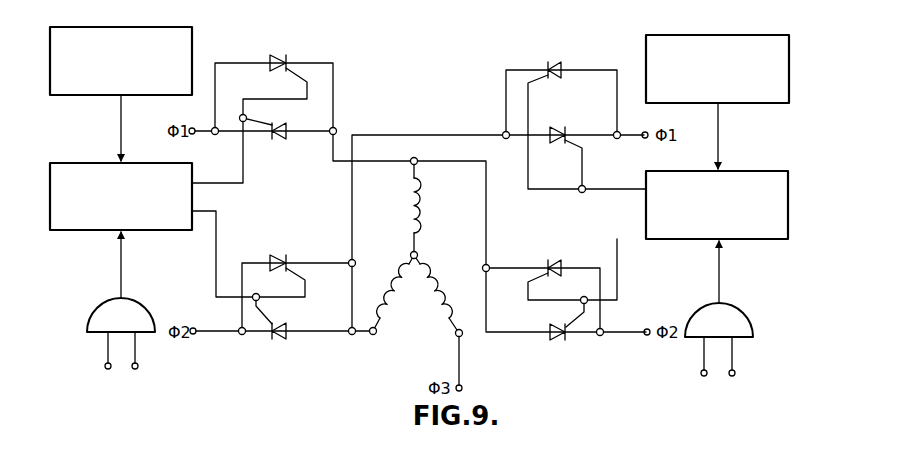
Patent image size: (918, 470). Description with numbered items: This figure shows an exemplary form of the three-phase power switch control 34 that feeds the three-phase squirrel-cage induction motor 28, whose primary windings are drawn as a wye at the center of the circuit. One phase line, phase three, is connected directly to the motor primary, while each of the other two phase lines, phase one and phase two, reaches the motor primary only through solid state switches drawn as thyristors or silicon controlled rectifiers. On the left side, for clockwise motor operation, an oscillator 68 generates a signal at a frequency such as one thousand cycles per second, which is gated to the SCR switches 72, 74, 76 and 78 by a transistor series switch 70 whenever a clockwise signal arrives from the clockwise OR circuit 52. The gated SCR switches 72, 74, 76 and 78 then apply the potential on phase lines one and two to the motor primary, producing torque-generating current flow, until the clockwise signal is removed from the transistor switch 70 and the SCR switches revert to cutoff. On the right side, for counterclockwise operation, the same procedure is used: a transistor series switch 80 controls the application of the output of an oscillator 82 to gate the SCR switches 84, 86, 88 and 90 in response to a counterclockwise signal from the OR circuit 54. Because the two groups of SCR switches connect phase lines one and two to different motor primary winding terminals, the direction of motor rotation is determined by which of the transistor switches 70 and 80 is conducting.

The three-phase squirrel-cage induction motor 28 is at (449, 258).
The three-phase power switch control 34 is at (433, 90).
The clockwise OR circuit 52 is at (105, 303).
The OR circuit 54 is at (734, 308).
The oscillator 68 is at (97, 25).
The transistor series switch 70 is at (93, 162).
The SCR switch 72 is at (279, 62).
The SCR switch 74 is at (274, 140).
The SCR switch 76 is at (278, 258).
The SCR switch 78 is at (276, 340).
The transistor series switch 80 is at (749, 171).
The oscillator 82 is at (739, 35).
The SCR switch 84 is at (560, 148).
The SCR switch 86 is at (557, 63).
The SCR switch 88 is at (556, 344).
The SCR switch 90 is at (558, 261).